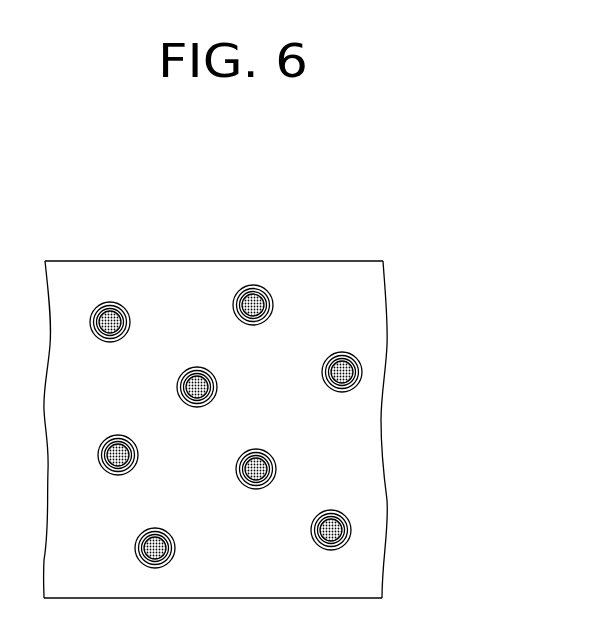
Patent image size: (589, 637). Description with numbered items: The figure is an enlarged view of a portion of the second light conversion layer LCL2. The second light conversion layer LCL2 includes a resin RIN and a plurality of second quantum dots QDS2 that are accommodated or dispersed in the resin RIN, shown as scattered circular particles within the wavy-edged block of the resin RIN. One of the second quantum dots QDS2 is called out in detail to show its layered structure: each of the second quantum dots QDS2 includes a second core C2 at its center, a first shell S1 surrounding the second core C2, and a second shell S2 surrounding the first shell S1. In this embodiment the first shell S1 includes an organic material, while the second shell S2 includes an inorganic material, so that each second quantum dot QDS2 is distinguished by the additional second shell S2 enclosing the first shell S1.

The second light conversion layer LCL2 is at (284, 382).
The resin RIN is at (370, 458).
The second quantum dots QDS2 is at (423, 367).
The second shell S2 is at (345, 353).
The first shell S1 is at (358, 362).
The second core C2 is at (343, 372).